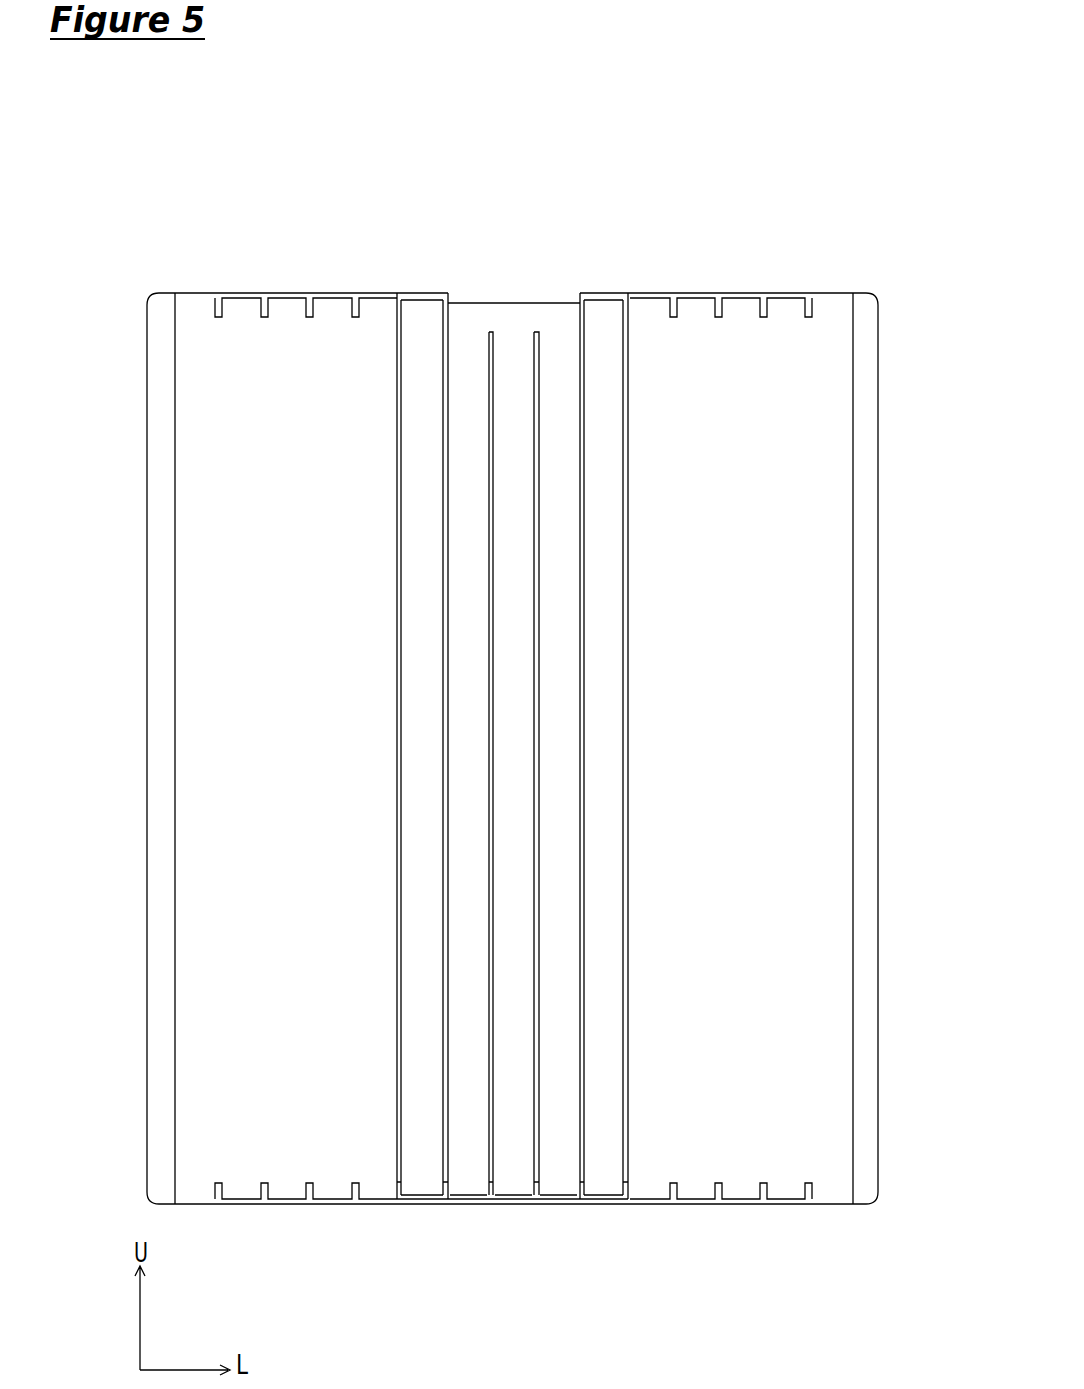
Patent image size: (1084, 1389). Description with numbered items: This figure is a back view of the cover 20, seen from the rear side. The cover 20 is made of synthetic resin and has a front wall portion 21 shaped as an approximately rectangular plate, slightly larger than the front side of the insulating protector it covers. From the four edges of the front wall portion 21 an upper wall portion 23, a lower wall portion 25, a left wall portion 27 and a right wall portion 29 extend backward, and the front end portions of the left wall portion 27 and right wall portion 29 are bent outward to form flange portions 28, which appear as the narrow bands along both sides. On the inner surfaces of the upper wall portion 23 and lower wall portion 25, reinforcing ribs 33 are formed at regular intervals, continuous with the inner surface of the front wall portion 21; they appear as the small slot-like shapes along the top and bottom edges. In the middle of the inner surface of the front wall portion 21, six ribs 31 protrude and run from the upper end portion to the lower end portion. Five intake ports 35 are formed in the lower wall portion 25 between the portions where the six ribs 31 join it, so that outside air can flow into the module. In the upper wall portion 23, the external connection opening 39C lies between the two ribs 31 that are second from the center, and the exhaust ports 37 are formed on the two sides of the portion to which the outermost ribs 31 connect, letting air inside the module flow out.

The cover 20 is at (277, 185).
The front wall portion 21 is at (710, 983).
The upper wall portion 23 is at (693, 293).
The lower wall portion 25 is at (783, 1203).
The left wall portion 27 is at (904, 733).
The flange portions 28 is at (862, 322).
The right wall portion 29 is at (117, 748).
The ribs 31 is at (585, 654).
The reinforcing ribs 33 is at (762, 317).
The intake ports 35 is at (607, 1203).
The exhaust ports 37 is at (422, 293).
The external connection opening 39C is at (510, 320).